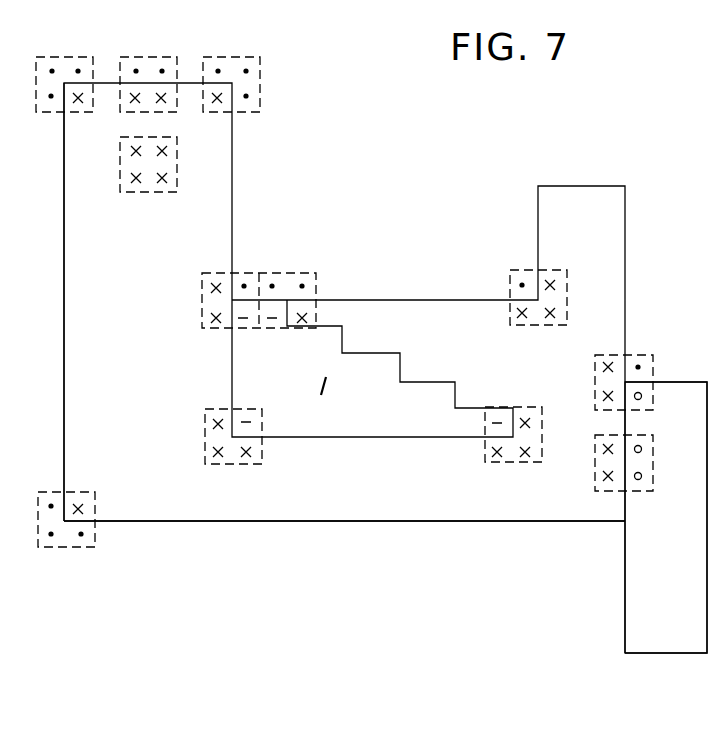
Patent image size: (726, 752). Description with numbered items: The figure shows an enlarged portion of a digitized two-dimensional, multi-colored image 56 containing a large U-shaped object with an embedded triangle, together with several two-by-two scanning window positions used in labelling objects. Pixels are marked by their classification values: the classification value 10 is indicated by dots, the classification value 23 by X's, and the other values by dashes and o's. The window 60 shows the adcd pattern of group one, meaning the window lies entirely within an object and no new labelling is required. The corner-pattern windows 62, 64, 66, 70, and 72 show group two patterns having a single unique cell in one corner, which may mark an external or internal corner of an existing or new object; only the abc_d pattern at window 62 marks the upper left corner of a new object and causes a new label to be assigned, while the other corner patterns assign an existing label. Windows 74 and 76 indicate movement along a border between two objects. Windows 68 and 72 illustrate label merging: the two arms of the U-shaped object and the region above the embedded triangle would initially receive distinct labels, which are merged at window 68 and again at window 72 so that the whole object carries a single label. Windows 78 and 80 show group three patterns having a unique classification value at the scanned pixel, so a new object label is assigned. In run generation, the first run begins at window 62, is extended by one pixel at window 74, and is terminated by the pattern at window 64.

The image 56 is at (482, 158).
The scanning window 62 is at (39, 56).
The scanning window 74 is at (128, 56).
The scanning window 64 is at (225, 56).
The scanning window 60 is at (176, 163).
The scanning window 78 is at (243, 272).
The scanning window 68 is at (553, 269).
The scanning window 80 is at (632, 354).
The scanning window 76 is at (655, 460).
The scanning window 66 is at (222, 465).
The scanning window 72 is at (525, 463).
The scanning window 70 is at (73, 549).
The classification value 23 is at (110, 302).
The classification value 10 is at (405, 577).